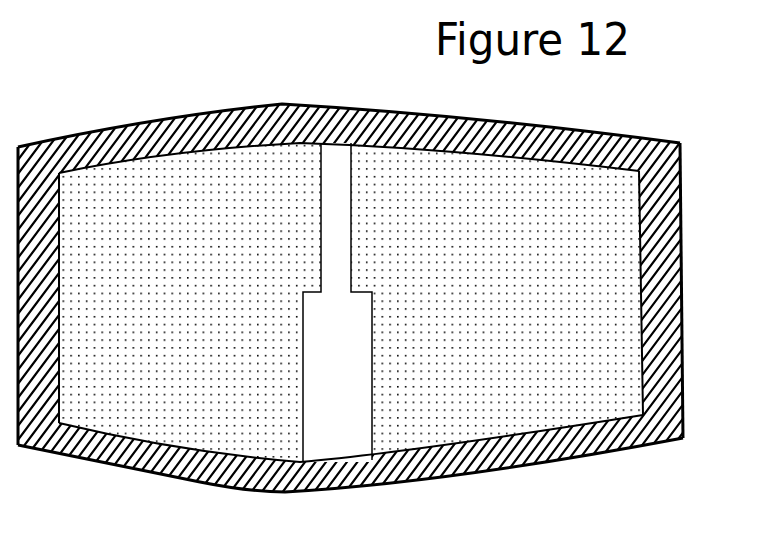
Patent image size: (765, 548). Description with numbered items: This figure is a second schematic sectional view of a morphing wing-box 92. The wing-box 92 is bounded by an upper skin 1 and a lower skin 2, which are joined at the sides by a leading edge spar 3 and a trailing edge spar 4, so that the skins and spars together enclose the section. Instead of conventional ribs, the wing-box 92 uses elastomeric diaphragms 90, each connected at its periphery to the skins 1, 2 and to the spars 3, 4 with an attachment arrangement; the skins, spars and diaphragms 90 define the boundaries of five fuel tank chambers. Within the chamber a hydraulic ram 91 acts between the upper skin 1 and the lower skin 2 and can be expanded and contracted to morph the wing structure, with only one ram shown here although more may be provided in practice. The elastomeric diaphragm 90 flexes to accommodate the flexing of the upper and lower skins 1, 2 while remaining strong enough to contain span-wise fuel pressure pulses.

The upper skin 1 is at (187, 118).
The lower skin 2 is at (232, 488).
The leading edge spar 3 is at (44, 244).
The trailing edge spar 4 is at (667, 267).
The elastomeric diaphragm 90 is at (477, 360).
The hydraulic ram 91 is at (337, 202).
The wing-box 92 is at (281, 93).